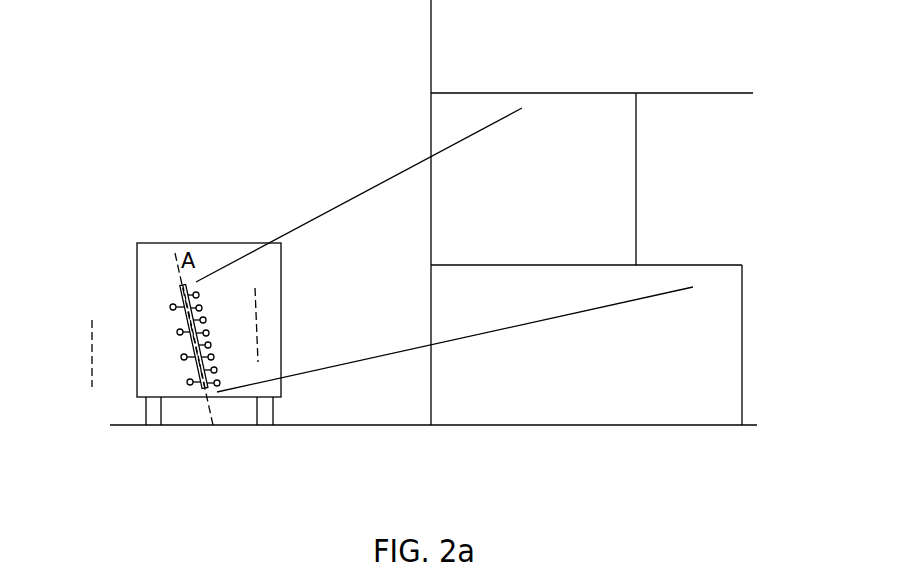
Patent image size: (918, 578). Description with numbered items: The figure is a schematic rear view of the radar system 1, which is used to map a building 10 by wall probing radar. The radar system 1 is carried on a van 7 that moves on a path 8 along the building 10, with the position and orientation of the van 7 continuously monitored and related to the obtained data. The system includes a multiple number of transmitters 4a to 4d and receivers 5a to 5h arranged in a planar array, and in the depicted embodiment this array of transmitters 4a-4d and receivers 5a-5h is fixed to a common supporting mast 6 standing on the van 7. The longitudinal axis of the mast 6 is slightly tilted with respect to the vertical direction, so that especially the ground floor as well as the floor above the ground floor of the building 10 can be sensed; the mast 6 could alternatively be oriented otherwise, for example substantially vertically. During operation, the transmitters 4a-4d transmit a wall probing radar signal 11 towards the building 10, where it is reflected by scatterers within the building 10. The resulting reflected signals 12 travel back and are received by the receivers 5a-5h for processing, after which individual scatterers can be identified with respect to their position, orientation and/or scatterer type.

The radar system 1 is at (102, 242).
The transmitter 4a is at (170, 307).
The transmitter 4d is at (187, 383).
The receiver 5a is at (200, 294).
The receiver 5h is at (221, 382).
The supporting mast 6 is at (178, 292).
The van 7 is at (182, 398).
The path 8 is at (237, 427).
The building 10 is at (417, 52).
The wall probing radar signal 11 is at (415, 273).
The reflected signals 12 is at (390, 225).